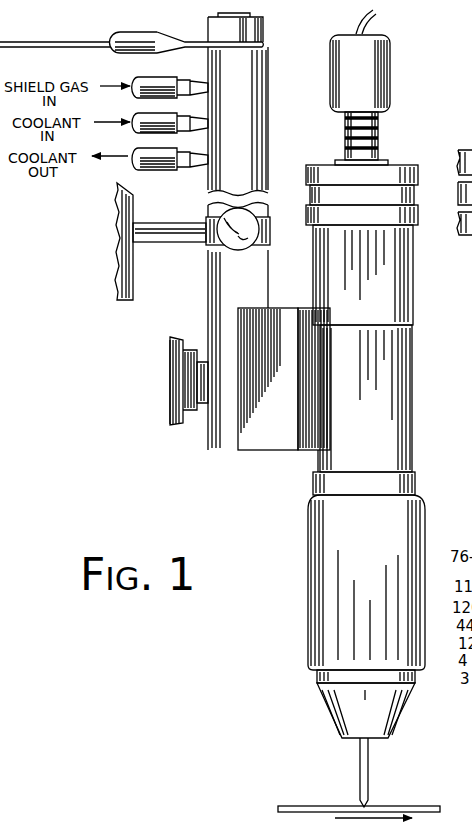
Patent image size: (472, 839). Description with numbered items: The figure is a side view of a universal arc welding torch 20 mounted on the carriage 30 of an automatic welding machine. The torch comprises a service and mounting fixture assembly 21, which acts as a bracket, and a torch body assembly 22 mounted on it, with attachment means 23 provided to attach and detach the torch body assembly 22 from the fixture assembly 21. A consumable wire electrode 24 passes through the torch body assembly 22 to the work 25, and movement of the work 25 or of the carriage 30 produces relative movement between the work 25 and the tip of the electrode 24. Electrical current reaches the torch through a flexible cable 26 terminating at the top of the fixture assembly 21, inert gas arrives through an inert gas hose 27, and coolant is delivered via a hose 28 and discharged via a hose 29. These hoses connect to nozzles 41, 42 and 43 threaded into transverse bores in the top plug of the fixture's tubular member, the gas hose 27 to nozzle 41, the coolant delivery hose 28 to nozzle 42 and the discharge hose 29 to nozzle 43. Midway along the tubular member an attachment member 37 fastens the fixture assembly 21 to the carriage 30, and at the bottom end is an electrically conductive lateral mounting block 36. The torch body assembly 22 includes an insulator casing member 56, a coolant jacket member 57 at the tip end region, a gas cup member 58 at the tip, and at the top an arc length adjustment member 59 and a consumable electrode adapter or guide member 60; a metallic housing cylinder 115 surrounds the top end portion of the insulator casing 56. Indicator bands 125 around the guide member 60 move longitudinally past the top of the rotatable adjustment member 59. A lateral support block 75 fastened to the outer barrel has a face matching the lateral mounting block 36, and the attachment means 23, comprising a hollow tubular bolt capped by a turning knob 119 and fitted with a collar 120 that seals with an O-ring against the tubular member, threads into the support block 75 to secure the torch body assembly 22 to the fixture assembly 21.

The universal arc welding torch 20 is at (186, 484).
The service and mounting fixture assembly 21 is at (206, 306).
The torch body assembly 22 is at (314, 464).
The attachment means 23 is at (157, 396).
The consumable wire electrode 24 is at (375, 18).
The work 25 is at (420, 806).
The flexible cable 26 is at (132, 49).
The inert gas hose 27 is at (133, 89).
The coolant delivery hose 28 is at (133, 125).
The coolant discharge hose 29 is at (133, 161).
The carriage 30 is at (133, 285).
The lateral mounting block 36 is at (268, 320).
The attachment member 37 is at (184, 228).
The nozzle 41 is at (183, 80).
The nozzle 42 is at (183, 120).
The nozzle 43 is at (186, 158).
The insulator casing member 56 is at (412, 445).
The coolant jacket member 57 is at (313, 602).
The gas cup member 58 is at (330, 715).
The arc length adjustment member 59 is at (418, 172).
The consumable electrode adapter member 60 is at (390, 82).
The lateral support block 75 is at (306, 306).
The metallic housing cylinder 115 is at (415, 308).
The turning knob 119 is at (158, 386).
The collar 120 is at (204, 405).
The indicator bands 125 is at (345, 133).